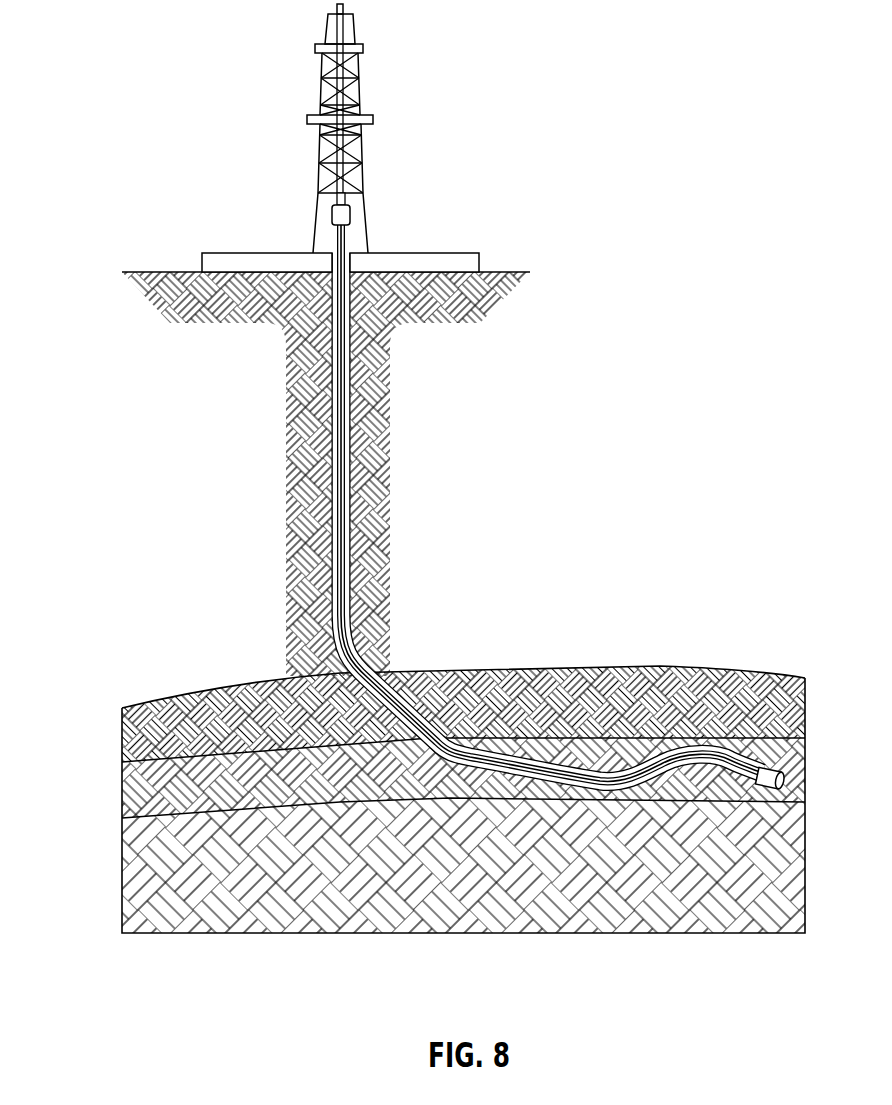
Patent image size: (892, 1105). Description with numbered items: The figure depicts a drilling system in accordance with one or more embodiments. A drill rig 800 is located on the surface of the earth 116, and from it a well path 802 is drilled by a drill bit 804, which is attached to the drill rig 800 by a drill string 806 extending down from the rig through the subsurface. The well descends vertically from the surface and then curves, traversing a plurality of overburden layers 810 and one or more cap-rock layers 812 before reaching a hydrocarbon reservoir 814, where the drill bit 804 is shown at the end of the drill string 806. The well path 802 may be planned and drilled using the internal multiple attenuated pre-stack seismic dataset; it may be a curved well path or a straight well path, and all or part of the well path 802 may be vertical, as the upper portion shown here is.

The surface of the earth 116 is at (518, 271).
The drill rig 800 is at (365, 150).
The well path 802 is at (329, 411).
The drill bit 804 is at (768, 768).
The drill string 806 is at (346, 236).
The overburden layers 810 is at (386, 403).
The cap-rock layers 812 is at (128, 728).
The hydrocarbon reservoir 814 is at (128, 802).